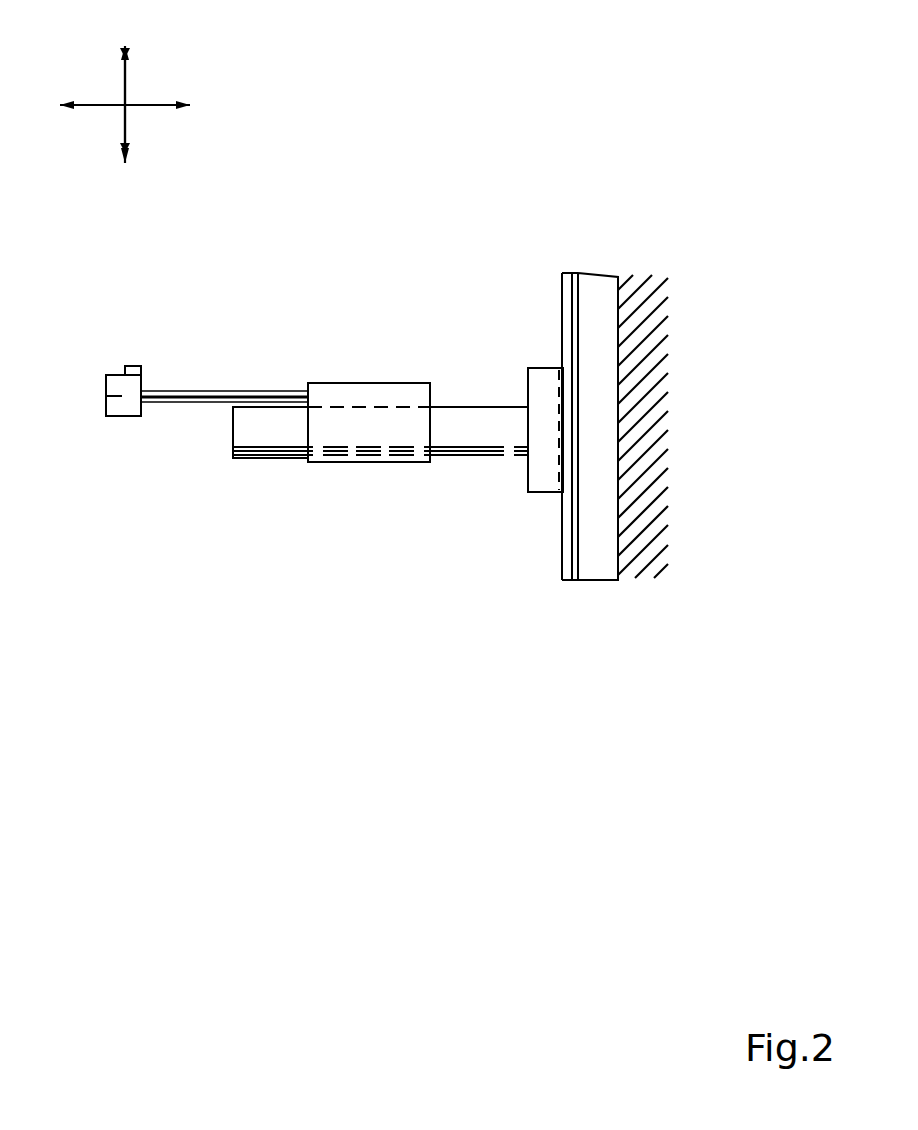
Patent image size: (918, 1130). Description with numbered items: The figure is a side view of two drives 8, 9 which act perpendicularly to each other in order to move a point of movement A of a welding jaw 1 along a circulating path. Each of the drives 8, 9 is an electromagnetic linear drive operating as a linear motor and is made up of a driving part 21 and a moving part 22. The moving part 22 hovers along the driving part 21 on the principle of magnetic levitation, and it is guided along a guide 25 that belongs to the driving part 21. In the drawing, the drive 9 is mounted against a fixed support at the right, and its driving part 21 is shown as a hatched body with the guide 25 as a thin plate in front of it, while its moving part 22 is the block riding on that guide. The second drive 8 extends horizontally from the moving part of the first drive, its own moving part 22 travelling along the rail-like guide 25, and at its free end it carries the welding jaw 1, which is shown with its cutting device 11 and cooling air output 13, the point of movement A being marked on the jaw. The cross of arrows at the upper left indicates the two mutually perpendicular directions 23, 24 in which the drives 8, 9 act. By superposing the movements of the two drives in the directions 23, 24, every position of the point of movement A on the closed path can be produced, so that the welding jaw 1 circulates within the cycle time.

The welding jaw 1 is at (122, 388).
The cooling air output 13 is at (133, 371).
The cutting device 11 is at (136, 418).
The point of movement A is at (106, 396).
The direction 23 is at (147, 104).
The direction 24 is at (128, 125).
The moving part 22 is at (336, 378).
The guide 25 is at (240, 462).
The drive 8 is at (288, 468).
The drive 9 is at (536, 352).
The driving part 21 is at (600, 336).